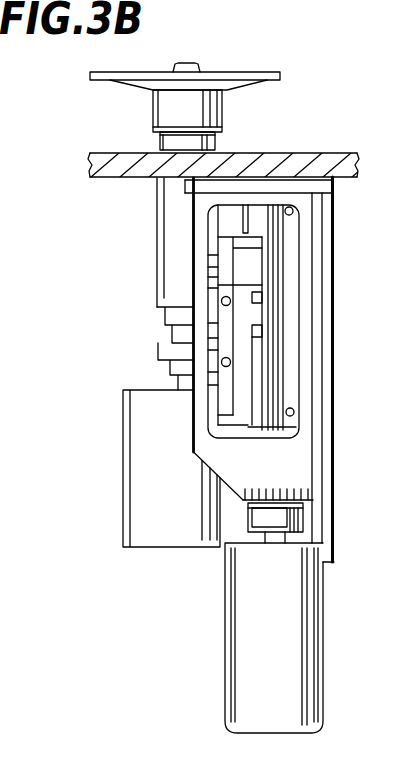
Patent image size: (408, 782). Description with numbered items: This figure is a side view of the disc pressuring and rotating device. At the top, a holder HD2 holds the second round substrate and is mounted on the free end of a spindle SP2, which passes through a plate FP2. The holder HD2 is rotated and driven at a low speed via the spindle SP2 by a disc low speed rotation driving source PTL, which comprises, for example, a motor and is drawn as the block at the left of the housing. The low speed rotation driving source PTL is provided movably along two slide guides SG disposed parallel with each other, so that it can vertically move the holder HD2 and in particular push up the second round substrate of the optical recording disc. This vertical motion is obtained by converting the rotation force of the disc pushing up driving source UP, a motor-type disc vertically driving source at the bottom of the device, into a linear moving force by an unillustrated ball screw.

The holder HD2 is at (223, 107).
The front plate FP2 is at (239, 188).
The spindle SP2 is at (168, 255).
The slide guides SG is at (273, 332).
The disc low speed rotation driving source PTL is at (152, 533).
The disc pushing up driving source UP is at (237, 700).